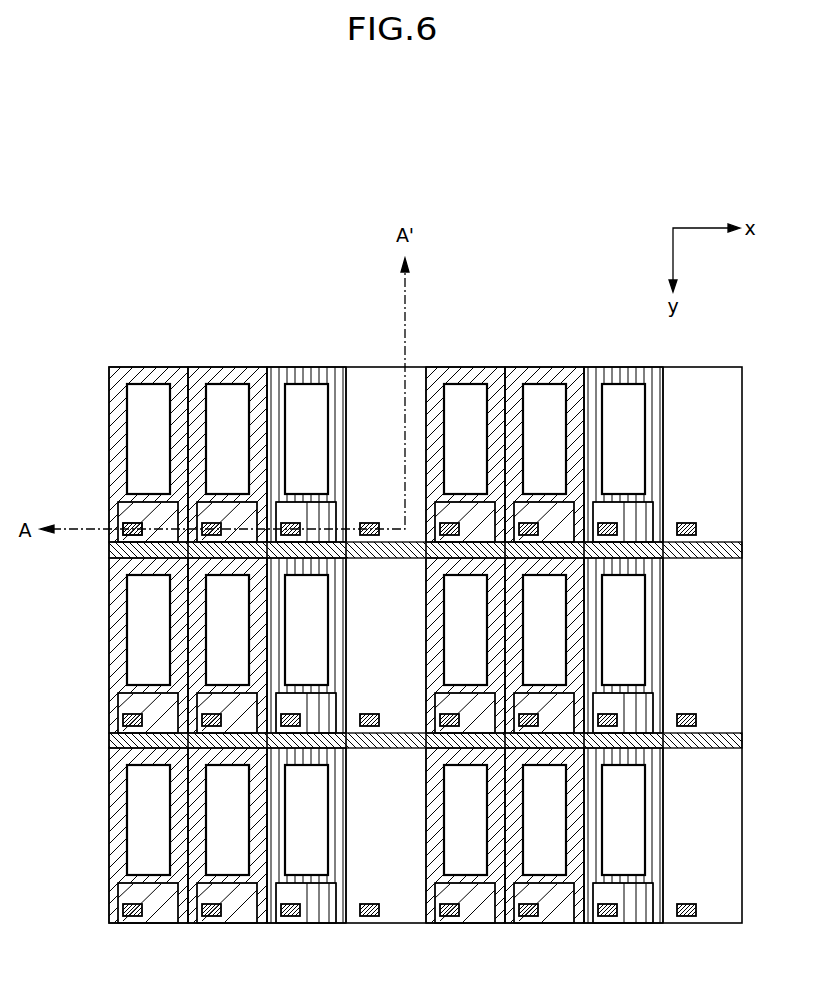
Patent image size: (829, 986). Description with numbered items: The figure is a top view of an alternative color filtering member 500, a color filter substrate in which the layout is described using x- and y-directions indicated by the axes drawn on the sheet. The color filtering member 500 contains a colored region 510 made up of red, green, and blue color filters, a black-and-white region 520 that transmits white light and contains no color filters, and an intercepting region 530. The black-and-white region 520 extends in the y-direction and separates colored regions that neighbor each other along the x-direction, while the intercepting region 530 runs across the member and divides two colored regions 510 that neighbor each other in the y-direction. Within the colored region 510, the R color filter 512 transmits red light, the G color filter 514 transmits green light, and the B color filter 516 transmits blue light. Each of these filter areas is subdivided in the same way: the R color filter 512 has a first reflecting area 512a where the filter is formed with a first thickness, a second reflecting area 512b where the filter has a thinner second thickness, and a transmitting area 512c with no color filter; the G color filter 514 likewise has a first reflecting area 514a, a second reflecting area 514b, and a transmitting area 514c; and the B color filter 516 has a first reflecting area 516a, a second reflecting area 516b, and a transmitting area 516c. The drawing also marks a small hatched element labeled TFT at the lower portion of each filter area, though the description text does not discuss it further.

The color filtering member 500 is at (428, 202).
The colored region 510 is at (98, 267).
The R color filter 512 is at (58, 305).
The first reflecting area 512a is at (108, 423).
The second reflecting area 512b is at (110, 367).
The transmitting area 512c is at (153, 492).
The G color filter 514 is at (172, 305).
The first reflecting area 514a is at (200, 388).
The second reflecting area 514b is at (225, 497).
The transmitting area 514c is at (229, 418).
The B color filter 516 is at (387, 305).
The first reflecting area 516a is at (295, 378).
The second reflecting area 516b is at (303, 512).
The transmitting area 516c is at (326, 440).
The black-and-white region 520 is at (422, 377).
The intercepting region 530 is at (108, 550).
The thin film transistor TFT is at (128, 520).